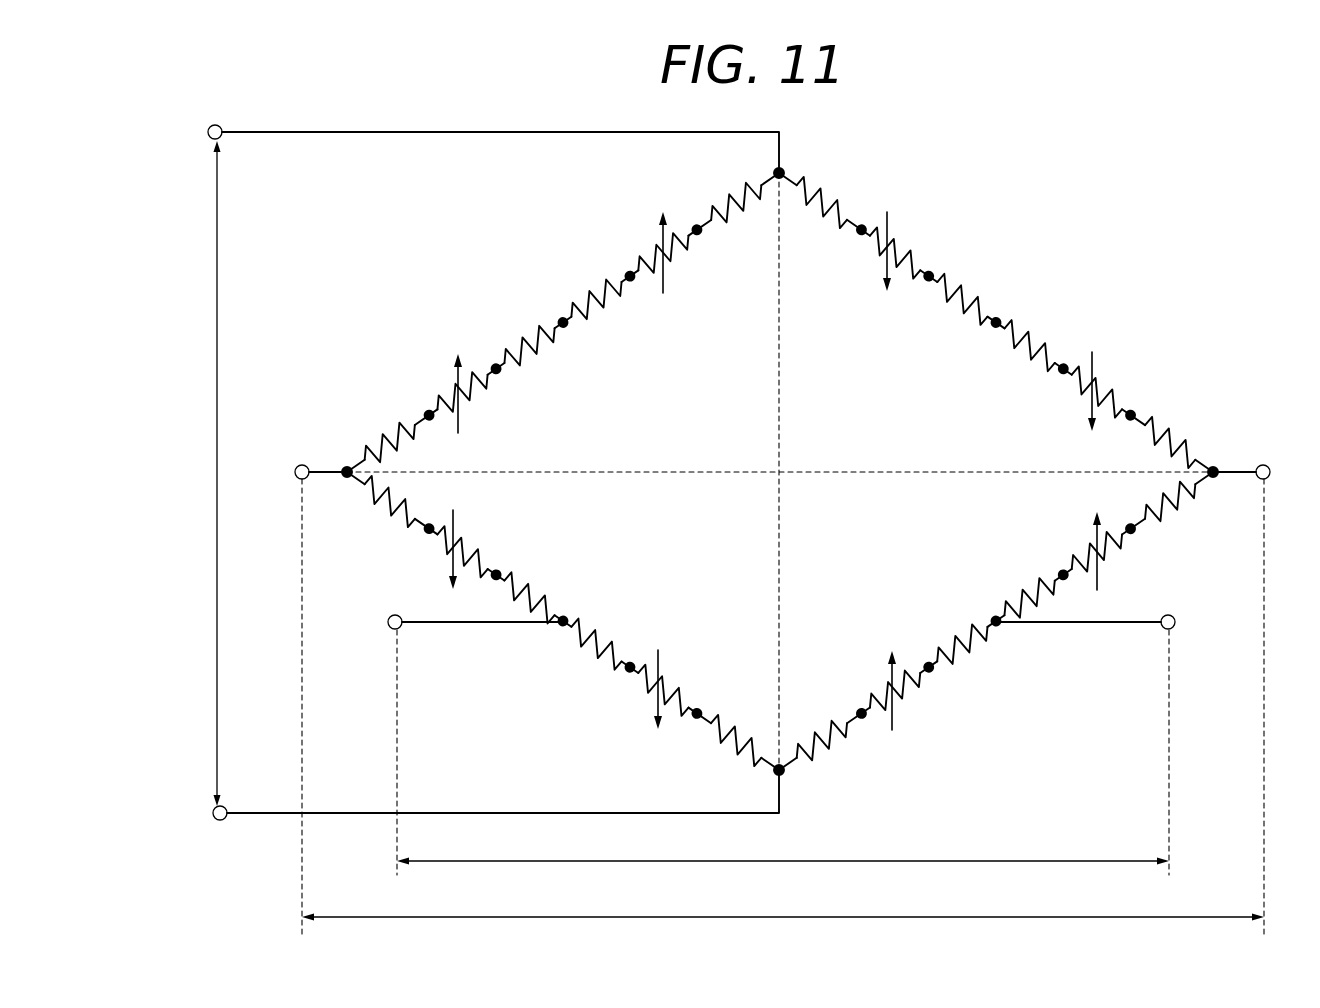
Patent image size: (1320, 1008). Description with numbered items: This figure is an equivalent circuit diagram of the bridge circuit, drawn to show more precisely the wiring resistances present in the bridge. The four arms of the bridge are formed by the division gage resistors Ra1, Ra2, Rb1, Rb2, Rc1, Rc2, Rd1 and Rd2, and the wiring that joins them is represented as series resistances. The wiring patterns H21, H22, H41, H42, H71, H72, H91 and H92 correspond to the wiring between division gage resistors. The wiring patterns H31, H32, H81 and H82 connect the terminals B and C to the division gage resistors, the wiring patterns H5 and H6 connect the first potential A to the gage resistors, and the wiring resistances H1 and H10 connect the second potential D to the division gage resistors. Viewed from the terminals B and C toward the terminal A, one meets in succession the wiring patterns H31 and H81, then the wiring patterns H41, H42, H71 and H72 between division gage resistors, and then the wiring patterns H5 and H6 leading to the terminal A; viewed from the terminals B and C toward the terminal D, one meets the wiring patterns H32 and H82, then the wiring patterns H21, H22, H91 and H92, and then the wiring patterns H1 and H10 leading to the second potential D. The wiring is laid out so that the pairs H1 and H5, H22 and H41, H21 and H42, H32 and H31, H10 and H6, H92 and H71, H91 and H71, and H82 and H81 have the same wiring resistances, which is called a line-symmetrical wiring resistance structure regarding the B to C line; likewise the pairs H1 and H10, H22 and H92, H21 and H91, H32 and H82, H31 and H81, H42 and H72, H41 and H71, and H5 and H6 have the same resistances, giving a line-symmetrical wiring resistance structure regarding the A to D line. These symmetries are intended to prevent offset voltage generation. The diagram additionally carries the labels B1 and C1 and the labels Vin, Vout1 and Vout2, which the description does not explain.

The terminal A is at (203, 133).
The terminal B is at (289, 474).
The terminal C is at (1273, 471).
The terminal D is at (209, 825).
The intermediate output terminal B1 is at (379, 624).
The intermediate output terminal C1 is at (1187, 624).
The input voltage Vin is at (194, 467).
The first output voltage Vout1 is at (776, 901).
The second output voltage Vout2 is at (776, 845).
The wiring pattern H31 is at (380, 443).
The division gage resistor Ra2 is at (453, 380).
The wiring pattern H42 is at (527, 357).
The wiring pattern H41 is at (597, 308).
The division gage resistor Ra1 is at (658, 242).
The wiring pattern H5 is at (747, 207).
The wiring pattern H6 is at (812, 207).
The division gage resistor Rc1 is at (890, 236).
The wiring pattern H71 is at (965, 311).
The wiring pattern H72 is at (1037, 358).
The division gage resistor Rc2 is at (1105, 387).
The wiring pattern H81 is at (1173, 435).
The wiring pattern H32 is at (400, 517).
The division gage resistor Rb1 is at (448, 562).
The wiring pattern H21 is at (530, 587).
The wiring pattern H22 is at (605, 642).
The division gage resistor Rb2 is at (653, 700).
The wiring pattern H1 is at (740, 737).
The wiring pattern H10 is at (812, 740).
The division gage resistor Rd2 is at (902, 708).
The wiring pattern H92 is at (960, 633).
The wiring pattern H91 is at (1030, 587).
The division gage resistor Rd1 is at (1103, 563).
The wiring pattern H82 is at (1167, 515).